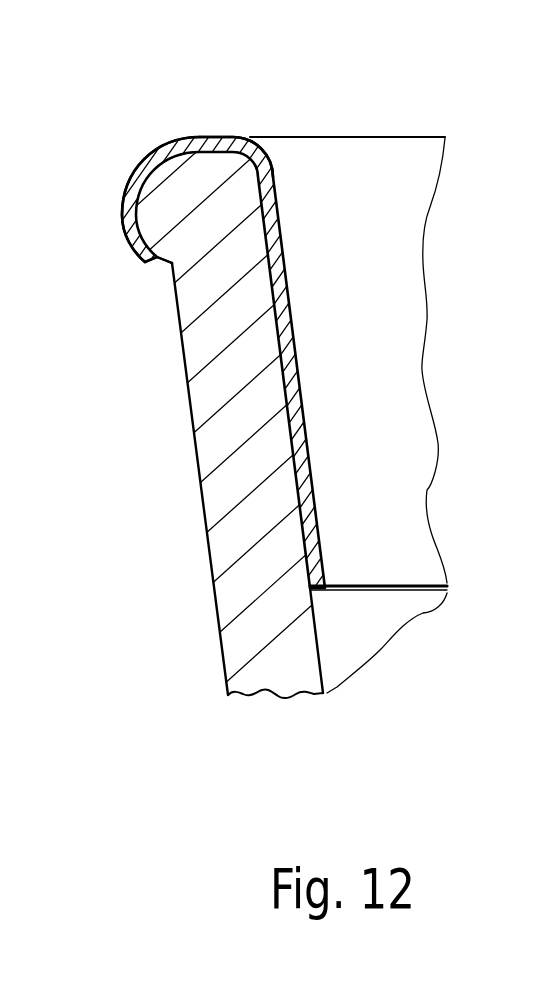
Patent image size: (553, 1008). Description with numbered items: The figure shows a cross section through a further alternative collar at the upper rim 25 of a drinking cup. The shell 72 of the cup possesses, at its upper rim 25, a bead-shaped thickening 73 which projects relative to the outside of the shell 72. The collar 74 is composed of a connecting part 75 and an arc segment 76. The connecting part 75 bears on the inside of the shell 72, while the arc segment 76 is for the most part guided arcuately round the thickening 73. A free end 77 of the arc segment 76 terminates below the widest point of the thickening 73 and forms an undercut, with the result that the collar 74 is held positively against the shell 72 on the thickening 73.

The upper rim 25 is at (250, 237).
The shell 72 is at (262, 678).
The bead-shaped thickening 73 is at (195, 193).
The collar 74 is at (167, 137).
The connecting part 75 is at (305, 418).
The arc segment 76 is at (148, 160).
The free end 77 is at (160, 265).